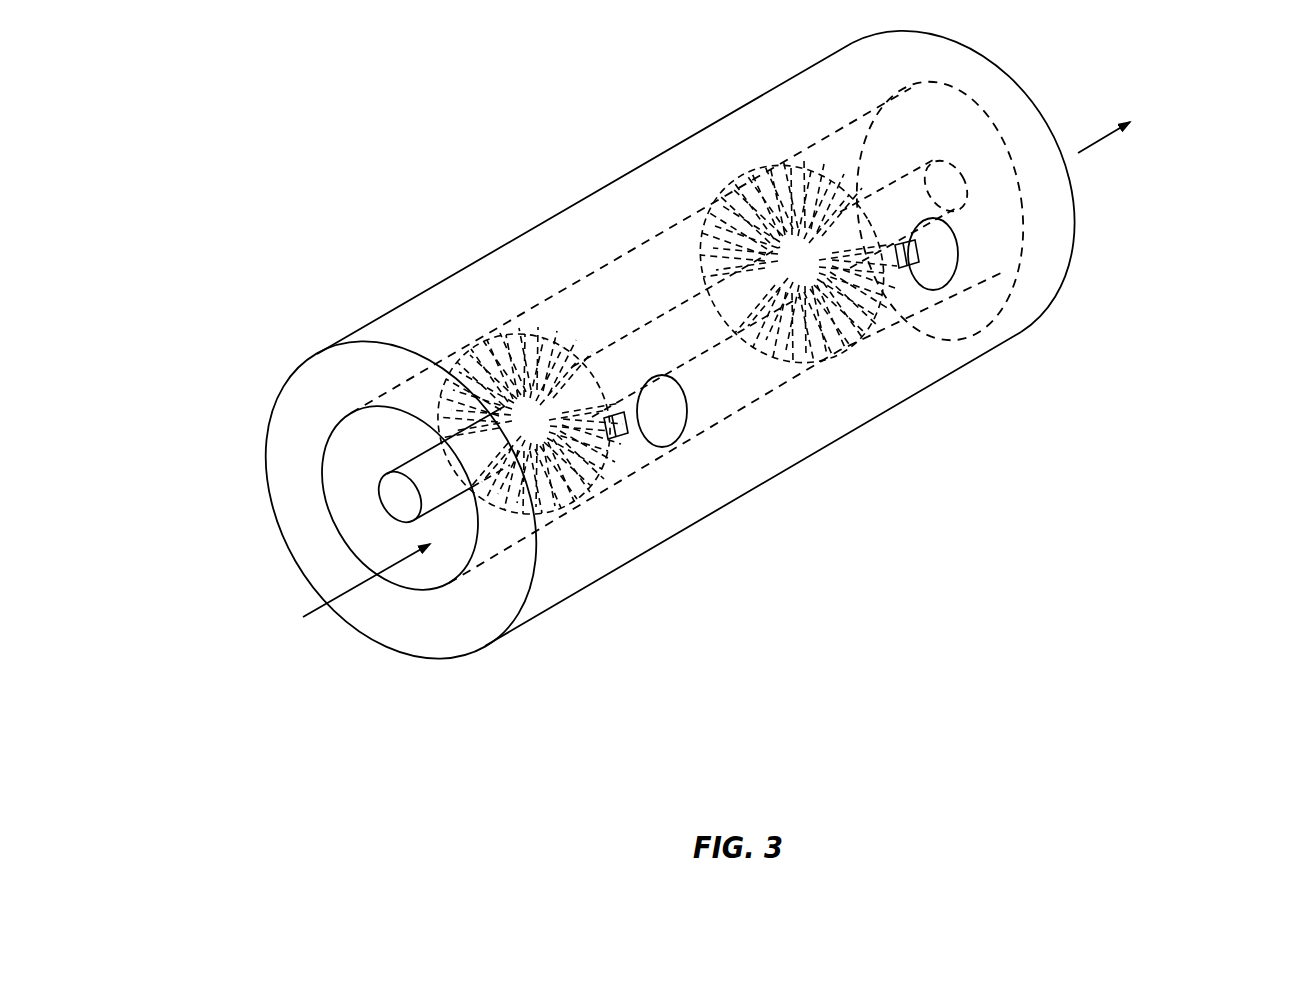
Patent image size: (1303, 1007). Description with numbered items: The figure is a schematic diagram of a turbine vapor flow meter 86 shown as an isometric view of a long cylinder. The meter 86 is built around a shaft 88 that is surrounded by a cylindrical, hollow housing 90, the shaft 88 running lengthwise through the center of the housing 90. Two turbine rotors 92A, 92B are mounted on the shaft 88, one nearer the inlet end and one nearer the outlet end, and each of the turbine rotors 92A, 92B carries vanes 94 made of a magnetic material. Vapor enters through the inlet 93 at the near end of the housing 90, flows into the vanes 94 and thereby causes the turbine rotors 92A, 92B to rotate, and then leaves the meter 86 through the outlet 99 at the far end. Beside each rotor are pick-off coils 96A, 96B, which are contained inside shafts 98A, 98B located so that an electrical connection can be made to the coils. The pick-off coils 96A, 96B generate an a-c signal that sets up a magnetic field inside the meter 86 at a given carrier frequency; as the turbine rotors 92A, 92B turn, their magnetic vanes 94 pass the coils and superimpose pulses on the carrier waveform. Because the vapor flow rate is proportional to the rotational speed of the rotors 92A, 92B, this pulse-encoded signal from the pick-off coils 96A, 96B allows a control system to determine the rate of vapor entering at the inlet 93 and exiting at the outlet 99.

The turbine vapor flow meter 86 is at (723, 377).
The shaft 88 is at (390, 490).
The housing 90 is at (476, 648).
The turbine rotor 92A is at (585, 522).
The turbine rotor 92B is at (853, 354).
The inlet 93 is at (316, 610).
The vanes 94 is at (603, 360).
The pick-off coil 96A is at (633, 437).
The pick-off coil 96B is at (902, 267).
The shaft 98A is at (697, 437).
The shaft 98B is at (958, 255).
The outlet 99 is at (1165, 117).